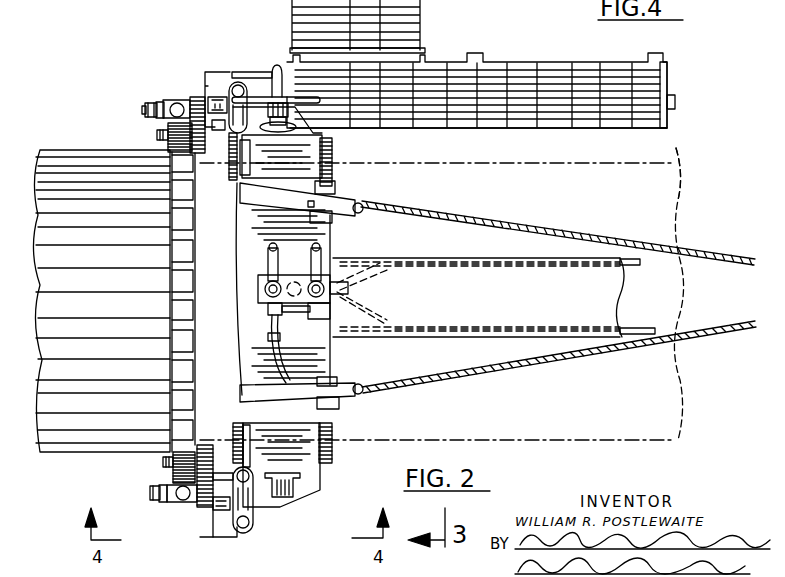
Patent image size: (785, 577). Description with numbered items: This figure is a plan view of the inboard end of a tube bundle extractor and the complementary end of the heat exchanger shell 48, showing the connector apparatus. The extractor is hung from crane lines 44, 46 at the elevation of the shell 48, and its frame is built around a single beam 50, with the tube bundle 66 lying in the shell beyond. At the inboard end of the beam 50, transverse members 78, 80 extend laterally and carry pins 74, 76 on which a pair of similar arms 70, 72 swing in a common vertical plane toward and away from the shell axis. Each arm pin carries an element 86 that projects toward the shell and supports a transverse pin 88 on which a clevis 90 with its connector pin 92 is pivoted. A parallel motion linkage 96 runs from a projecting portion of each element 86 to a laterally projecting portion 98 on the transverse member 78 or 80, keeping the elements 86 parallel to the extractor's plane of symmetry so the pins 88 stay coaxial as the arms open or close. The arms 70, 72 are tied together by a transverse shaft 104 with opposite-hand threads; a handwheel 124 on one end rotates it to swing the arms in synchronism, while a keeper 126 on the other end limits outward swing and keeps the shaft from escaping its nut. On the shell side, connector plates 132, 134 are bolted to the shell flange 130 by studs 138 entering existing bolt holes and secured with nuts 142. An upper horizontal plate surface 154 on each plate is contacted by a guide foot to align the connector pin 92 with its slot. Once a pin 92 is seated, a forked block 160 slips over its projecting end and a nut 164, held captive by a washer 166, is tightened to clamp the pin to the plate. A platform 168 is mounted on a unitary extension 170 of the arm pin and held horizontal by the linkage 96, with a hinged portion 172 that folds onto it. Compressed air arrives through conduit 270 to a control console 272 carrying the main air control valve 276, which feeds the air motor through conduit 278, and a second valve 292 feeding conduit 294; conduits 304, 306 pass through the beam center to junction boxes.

The line 44 is at (713, 338).
The line 46 is at (705, 252).
The shell 48 is at (80, 289).
The beam 50 is at (600, 307).
The tube bundle 66 is at (676, 186).
The arm 70 is at (288, 165).
The arm 72 is at (308, 468).
The pin 74 is at (330, 165).
The pin 76 is at (333, 432).
The transverse member 78 is at (253, 213).
The transverse member 80 is at (267, 383).
The element 86 is at (213, 508).
The transverse pin 88 is at (218, 96).
The clevis 90 is at (207, 74).
The connector pin 92 is at (148, 100).
The parallel motion linkage 96 is at (245, 88).
The laterally projecting portion 98 is at (230, 145).
The transverse shaft 104 is at (300, 133).
The handwheel 124 is at (258, 100).
The keeper 126 is at (293, 487).
The shell flange 130 is at (182, 297).
The connector plate 132 is at (194, 97).
The connector plate 134 is at (203, 508).
The studs 138 is at (157, 137).
The nuts 142 is at (166, 130).
The upper horizontal plate surface 154 is at (226, 528).
The forked block 160 is at (176, 100).
The nut 164 is at (162, 101).
The washer 166 is at (143, 107).
The platform 168 is at (528, 62).
The unitary extension 170 is at (442, 128).
The hinged portion 172 is at (427, 43).
The conduit 270 is at (272, 353).
The control console 272 is at (257, 288).
The main air control valve 276 is at (267, 268).
The conduit 278 is at (402, 317).
The second valve 292 is at (322, 270).
The conduit 294 is at (493, 268).
The conduit 304 is at (343, 345).
The conduit 306 is at (388, 278).